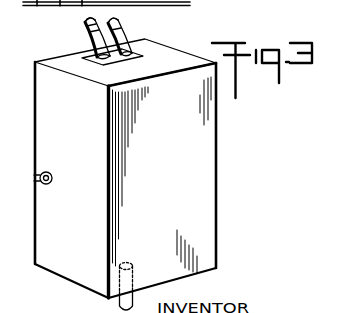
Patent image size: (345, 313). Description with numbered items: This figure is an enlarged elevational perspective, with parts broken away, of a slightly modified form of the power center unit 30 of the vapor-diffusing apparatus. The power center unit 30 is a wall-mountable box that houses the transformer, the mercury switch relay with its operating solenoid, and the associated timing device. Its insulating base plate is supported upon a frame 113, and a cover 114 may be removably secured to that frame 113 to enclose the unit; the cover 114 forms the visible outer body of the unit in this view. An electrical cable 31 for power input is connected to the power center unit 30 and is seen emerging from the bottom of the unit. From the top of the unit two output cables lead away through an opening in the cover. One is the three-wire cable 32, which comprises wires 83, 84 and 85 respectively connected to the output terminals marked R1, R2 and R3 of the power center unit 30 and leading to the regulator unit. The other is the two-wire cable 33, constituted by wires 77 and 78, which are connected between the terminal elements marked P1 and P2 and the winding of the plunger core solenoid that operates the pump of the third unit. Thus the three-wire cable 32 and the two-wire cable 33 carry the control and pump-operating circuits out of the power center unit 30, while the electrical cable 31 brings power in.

The power center unit 30 is at (216, 213).
The electrical cable 31 is at (132, 301).
The three-wire cable 32 is at (92, 44).
The two-wire cable 33 is at (126, 42).
The wire 77 is at (112, 18).
The wire 78 is at (121, 30).
The wire 83 is at (90, 32).
The wire 84 is at (88, 27).
The wire 85 is at (85, 22).
The frame 113 is at (143, 58).
The cover 114 is at (216, 147).